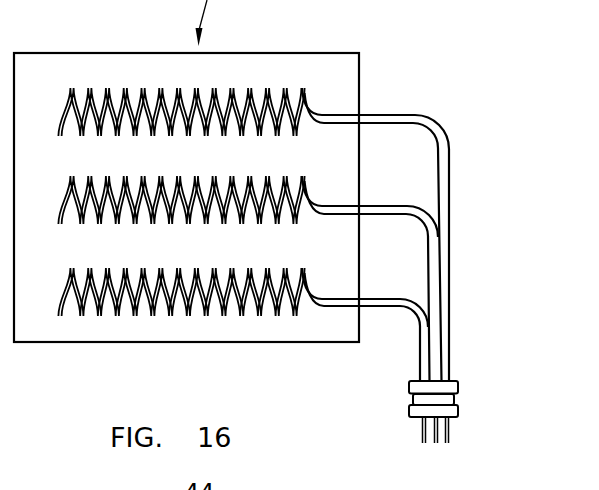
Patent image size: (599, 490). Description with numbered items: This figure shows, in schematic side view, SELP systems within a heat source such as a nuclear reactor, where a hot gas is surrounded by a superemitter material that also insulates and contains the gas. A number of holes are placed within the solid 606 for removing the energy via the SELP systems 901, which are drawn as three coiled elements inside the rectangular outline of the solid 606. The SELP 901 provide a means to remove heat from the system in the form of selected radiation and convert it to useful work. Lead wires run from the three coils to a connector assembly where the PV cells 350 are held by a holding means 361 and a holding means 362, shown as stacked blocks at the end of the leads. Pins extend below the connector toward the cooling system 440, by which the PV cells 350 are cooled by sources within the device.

The solid 606 is at (323, 70).
The SELP 901 is at (78, 316).
The holding means 361 is at (459, 388).
The PV cells 350 is at (443, 398).
The holding means 362 is at (412, 407).
The cooling system 440 is at (423, 433).